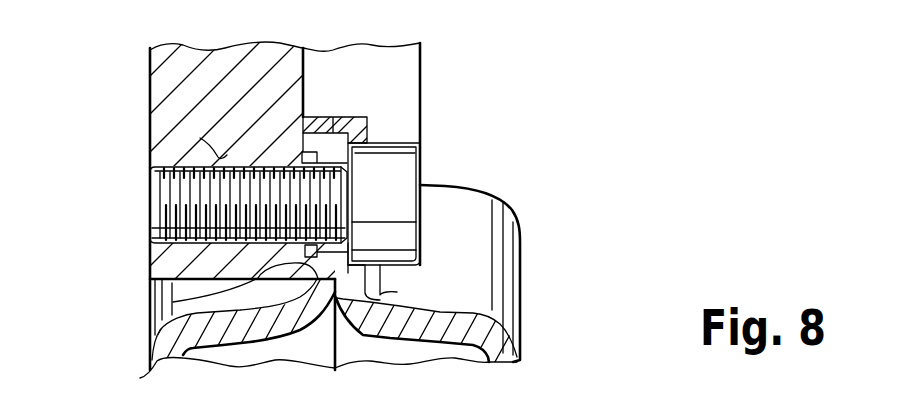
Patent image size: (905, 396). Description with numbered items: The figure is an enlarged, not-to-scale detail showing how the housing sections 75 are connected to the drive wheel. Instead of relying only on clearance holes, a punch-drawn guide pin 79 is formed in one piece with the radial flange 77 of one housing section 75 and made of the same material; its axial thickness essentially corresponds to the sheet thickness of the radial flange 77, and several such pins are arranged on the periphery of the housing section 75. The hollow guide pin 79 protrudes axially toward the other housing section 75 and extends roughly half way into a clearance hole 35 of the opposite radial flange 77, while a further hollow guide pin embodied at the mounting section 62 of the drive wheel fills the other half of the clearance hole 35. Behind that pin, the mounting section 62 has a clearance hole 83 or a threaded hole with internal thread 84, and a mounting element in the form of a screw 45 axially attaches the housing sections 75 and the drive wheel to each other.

The mounting section 62 is at (207, 78).
The internal thread 84 is at (200, 138).
The clearance hole 83 is at (150, 170).
The clearance hole 35 is at (157, 302).
The housing section 75 is at (140, 378).
The radial flange 77 is at (323, 117).
The screw 45 is at (405, 173).
The guide pin 79 is at (397, 292).